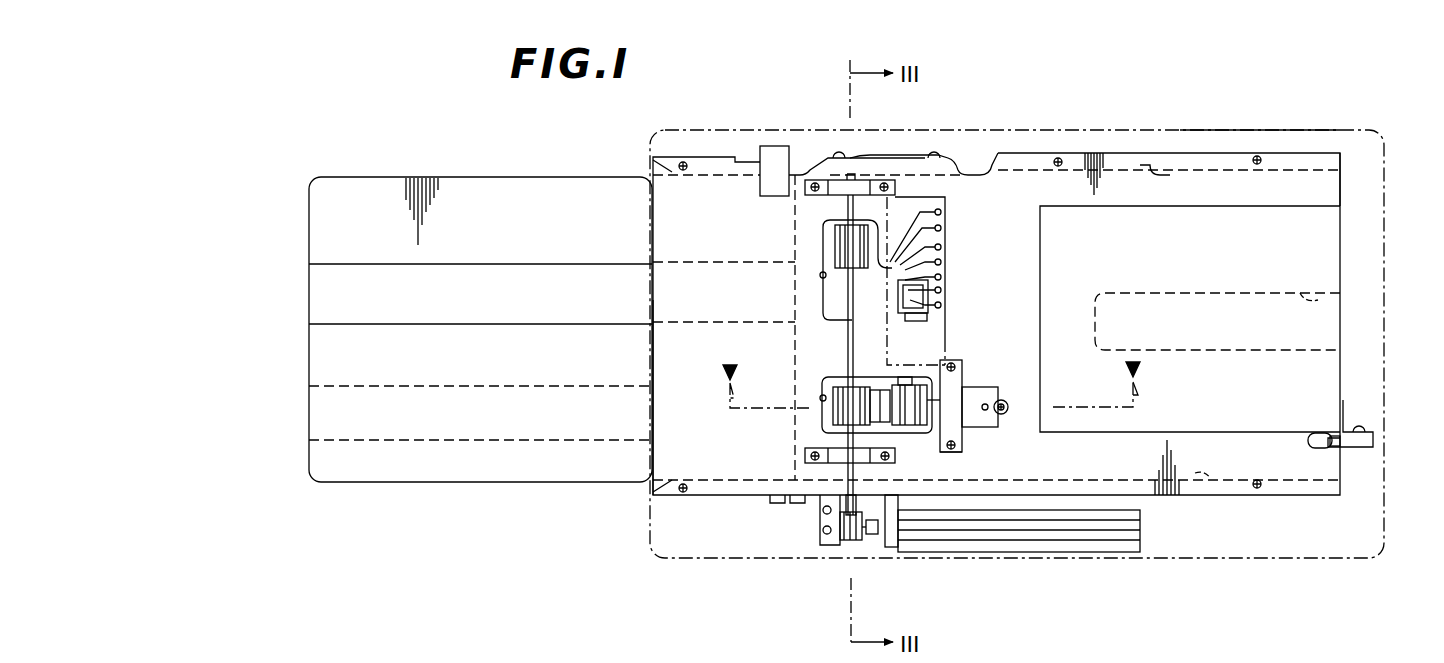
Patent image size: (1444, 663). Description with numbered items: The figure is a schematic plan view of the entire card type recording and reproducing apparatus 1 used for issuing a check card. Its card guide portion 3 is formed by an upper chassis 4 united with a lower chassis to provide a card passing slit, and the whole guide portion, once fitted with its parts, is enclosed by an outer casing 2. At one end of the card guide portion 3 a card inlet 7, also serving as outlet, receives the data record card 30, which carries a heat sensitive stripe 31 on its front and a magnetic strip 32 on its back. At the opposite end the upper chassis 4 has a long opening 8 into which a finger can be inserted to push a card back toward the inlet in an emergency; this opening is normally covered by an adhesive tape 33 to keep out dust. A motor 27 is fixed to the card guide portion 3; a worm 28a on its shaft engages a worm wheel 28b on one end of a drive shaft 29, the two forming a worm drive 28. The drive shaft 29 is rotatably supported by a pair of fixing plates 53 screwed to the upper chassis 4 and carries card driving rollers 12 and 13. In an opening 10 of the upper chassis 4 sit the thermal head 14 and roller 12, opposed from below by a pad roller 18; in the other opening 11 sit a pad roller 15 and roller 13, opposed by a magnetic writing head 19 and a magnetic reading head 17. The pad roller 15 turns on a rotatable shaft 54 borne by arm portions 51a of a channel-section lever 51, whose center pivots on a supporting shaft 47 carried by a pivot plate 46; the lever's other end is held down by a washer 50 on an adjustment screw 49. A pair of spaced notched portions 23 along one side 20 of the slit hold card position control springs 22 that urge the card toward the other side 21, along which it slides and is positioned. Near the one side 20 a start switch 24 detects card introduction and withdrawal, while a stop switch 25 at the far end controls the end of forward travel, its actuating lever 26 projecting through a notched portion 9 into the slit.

The card type recording and reproducing apparatus 1 is at (983, 83).
The outer casing 2 is at (1222, 130).
The card guide portion 3 is at (1268, 150).
The upper chassis 4 is at (1325, 185).
The card inlet 7 is at (652, 455).
The long opening 8 is at (1320, 300).
The notched portion 9 is at (1308, 440).
The opening 10 is at (828, 300).
The opening 11 is at (830, 380).
The card driving roller 12 is at (850, 245).
The card driving roller 13 is at (835, 415).
The thermal head 14 is at (907, 300).
The pad roller 15 is at (910, 420).
The magnetic reading head 17 is at (835, 405).
The pad roller 18 is at (930, 302).
The magnetic writing head 19 is at (880, 430).
The one side of the slit 20 is at (1160, 172).
The other side of the slit 21 is at (1207, 478).
The card position control spring 22 is at (817, 175).
The notched portion 23 is at (918, 168).
The start switch 24 is at (775, 165).
The stop switch 25 is at (1375, 440).
The actuating lever 26 is at (1320, 448).
The motor 27 is at (1100, 535).
The worm drive 28 is at (858, 540).
The worm 28a is at (845, 535).
The worm wheel 28b is at (850, 540).
The drive shaft 29 is at (848, 352).
The data record card 30 is at (450, 165).
The heat sensitive stripe 31 is at (500, 275).
The magnetic strip 32 is at (395, 420).
The adhesive tape 33 is at (1310, 245).
The pivot plate 46 is at (985, 427).
The supporting shaft 47 is at (955, 432).
The adjustment screw 49 is at (1005, 412).
The washer 50 is at (1020, 395).
The lever 51 is at (950, 376).
The arm portion 51a is at (925, 318).
The fixing plate 53 is at (810, 192).
The rotatable shaft 54 is at (900, 378).